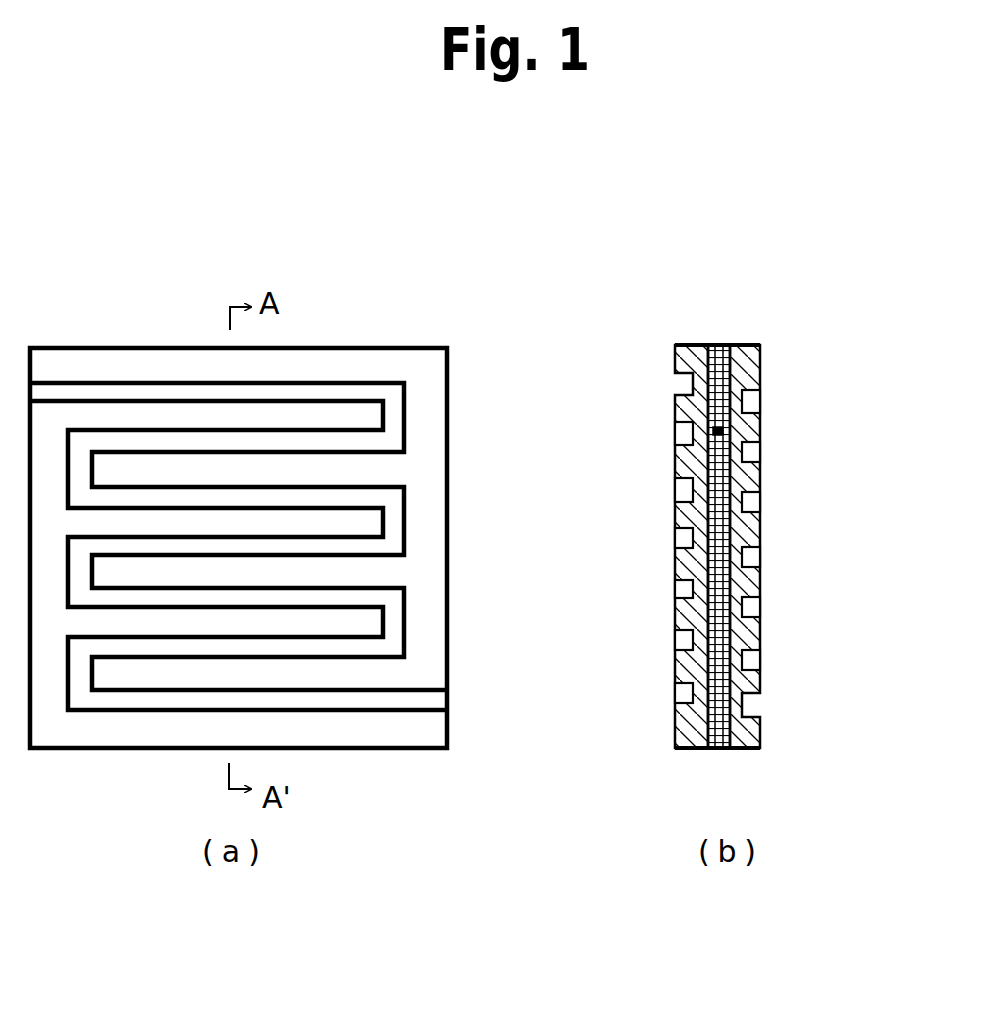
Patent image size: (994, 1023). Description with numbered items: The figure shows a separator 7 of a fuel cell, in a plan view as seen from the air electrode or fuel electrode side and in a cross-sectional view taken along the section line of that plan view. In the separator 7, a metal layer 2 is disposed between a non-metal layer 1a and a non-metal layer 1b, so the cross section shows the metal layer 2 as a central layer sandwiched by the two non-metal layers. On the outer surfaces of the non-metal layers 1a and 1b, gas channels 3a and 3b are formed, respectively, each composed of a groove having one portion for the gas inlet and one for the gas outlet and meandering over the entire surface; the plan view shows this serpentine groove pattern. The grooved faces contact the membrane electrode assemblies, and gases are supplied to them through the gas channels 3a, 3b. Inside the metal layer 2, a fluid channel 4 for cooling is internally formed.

The separator 7 is at (70, 342).
The non-metal layer 1a is at (308, 363).
The non-metal layer 1b is at (761, 346).
The metal layer 2 is at (737, 655).
The gas channel 3a is at (330, 643).
The gas channel 3b is at (760, 550).
The fluid channel 4 is at (723, 432).